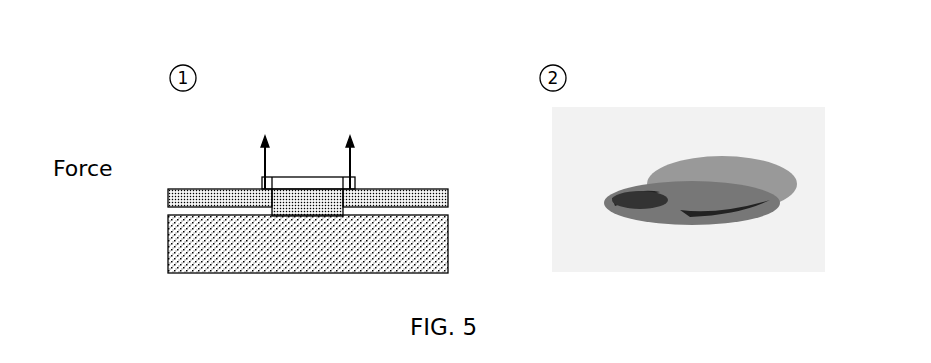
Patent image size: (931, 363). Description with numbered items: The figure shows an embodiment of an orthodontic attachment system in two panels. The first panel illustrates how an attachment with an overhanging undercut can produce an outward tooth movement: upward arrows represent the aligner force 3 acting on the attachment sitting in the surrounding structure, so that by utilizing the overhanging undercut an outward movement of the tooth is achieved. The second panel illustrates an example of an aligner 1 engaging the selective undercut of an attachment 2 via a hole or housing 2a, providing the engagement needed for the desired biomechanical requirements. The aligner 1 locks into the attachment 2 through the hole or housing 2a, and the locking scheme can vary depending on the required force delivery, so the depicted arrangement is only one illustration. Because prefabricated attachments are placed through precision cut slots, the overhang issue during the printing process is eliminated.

The aligner 1 is at (558, 175).
The attachment 2 is at (772, 165).
The hole or housing 2a is at (652, 200).
The aligner force 3 is at (349, 159).